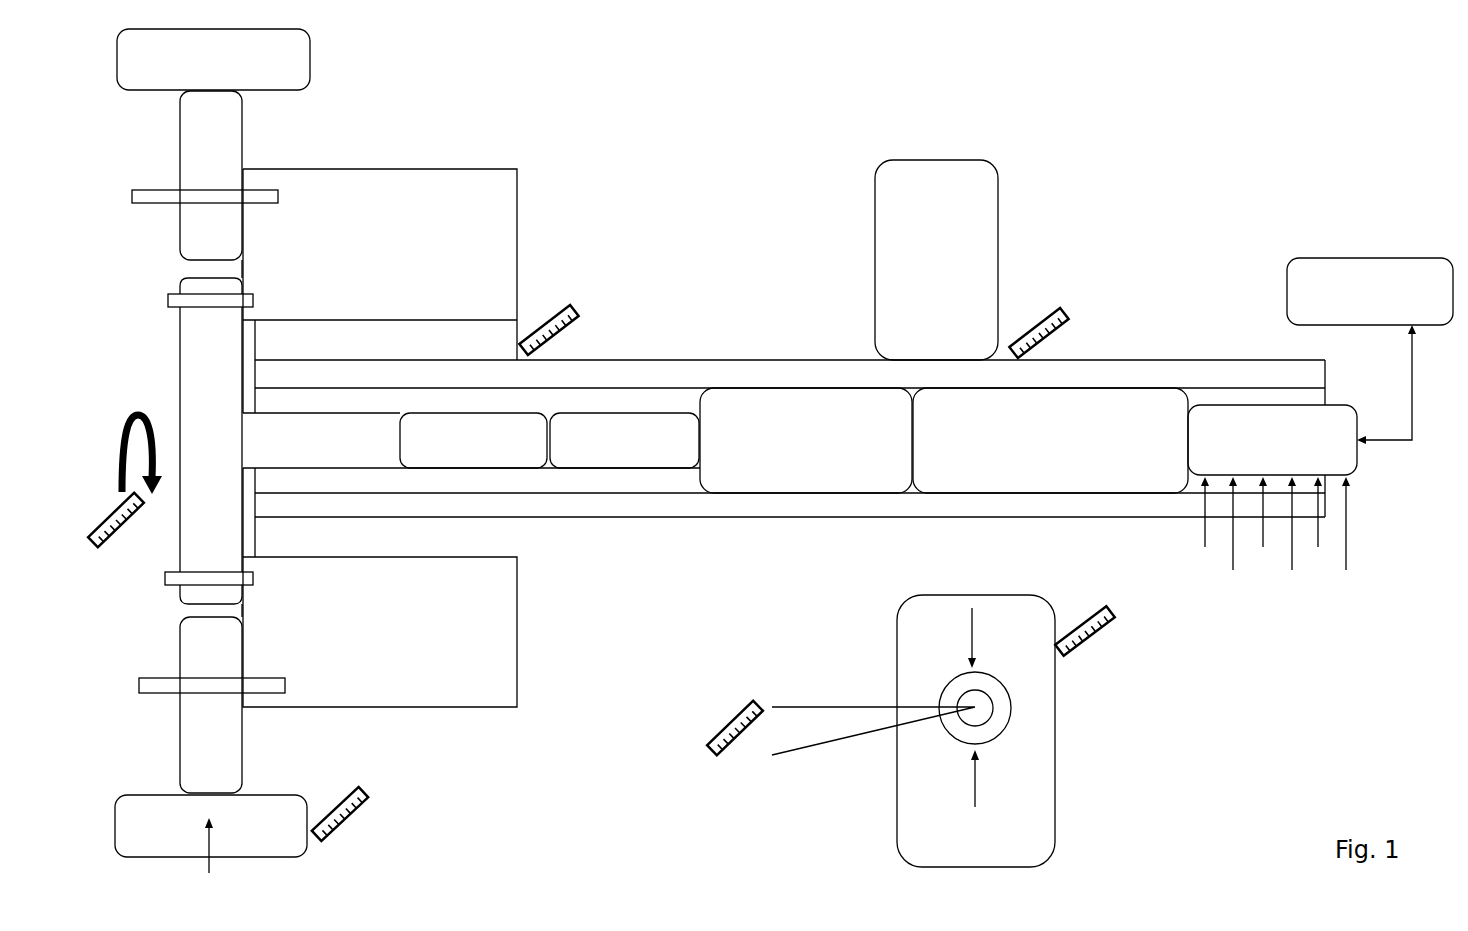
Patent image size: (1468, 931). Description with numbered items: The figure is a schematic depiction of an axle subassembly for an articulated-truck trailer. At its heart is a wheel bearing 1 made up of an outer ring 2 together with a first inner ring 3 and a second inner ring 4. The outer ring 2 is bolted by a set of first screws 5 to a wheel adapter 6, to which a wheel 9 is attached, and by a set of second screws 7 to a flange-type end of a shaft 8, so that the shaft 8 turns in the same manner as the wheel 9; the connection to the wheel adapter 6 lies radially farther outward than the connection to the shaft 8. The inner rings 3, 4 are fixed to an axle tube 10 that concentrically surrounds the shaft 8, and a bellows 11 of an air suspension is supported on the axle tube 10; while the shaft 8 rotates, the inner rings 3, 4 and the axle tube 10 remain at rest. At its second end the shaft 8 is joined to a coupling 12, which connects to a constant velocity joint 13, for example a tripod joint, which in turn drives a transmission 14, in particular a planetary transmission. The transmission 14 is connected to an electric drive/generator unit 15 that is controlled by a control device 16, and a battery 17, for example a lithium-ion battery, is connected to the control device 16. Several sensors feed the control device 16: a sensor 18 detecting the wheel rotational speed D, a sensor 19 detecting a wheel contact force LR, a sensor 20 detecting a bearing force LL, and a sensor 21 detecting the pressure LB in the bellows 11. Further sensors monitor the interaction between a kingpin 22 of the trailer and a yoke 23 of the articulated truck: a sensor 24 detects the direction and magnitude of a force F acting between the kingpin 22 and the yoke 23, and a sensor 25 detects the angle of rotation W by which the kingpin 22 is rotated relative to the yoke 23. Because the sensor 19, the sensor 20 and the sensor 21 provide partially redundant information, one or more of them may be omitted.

The wheel bearing 1 is at (766, 451).
The outer ring 2 is at (522, 618).
The first inner ring 3 is at (471, 520).
The second inner ring 4 is at (471, 440).
The first screws 5 is at (150, 185).
The wheel adapter 6 is at (168, 235).
The second screws 7 is at (163, 297).
The shaft 8 is at (177, 430).
The wheel 9 is at (148, 92).
The axle tube 10 is at (1115, 520).
The bellows 11 is at (1005, 257).
The coupling 12 is at (472, 472).
The constant velocity joint 13 is at (632, 475).
The transmission 14 is at (812, 498).
The electric drive/generator unit 15 is at (1035, 500).
The control device 16 is at (1272, 398).
The battery 17 is at (1367, 257).
The sensor for detecting the wheel rotational speed 18 is at (100, 510).
The sensor for detecting a wheel contact force 19 is at (373, 790).
The sensor for detecting a bearing force 20 is at (578, 308).
The sensor for detecting a pressure in the bellows 21 is at (1062, 305).
The kingpin 22 is at (997, 713).
The yoke 23 is at (1058, 775).
The sensor for detecting the force on the kingpin 24 is at (1097, 643).
The sensor for detecting the angle of rotation of the kingpin 25 is at (760, 698).